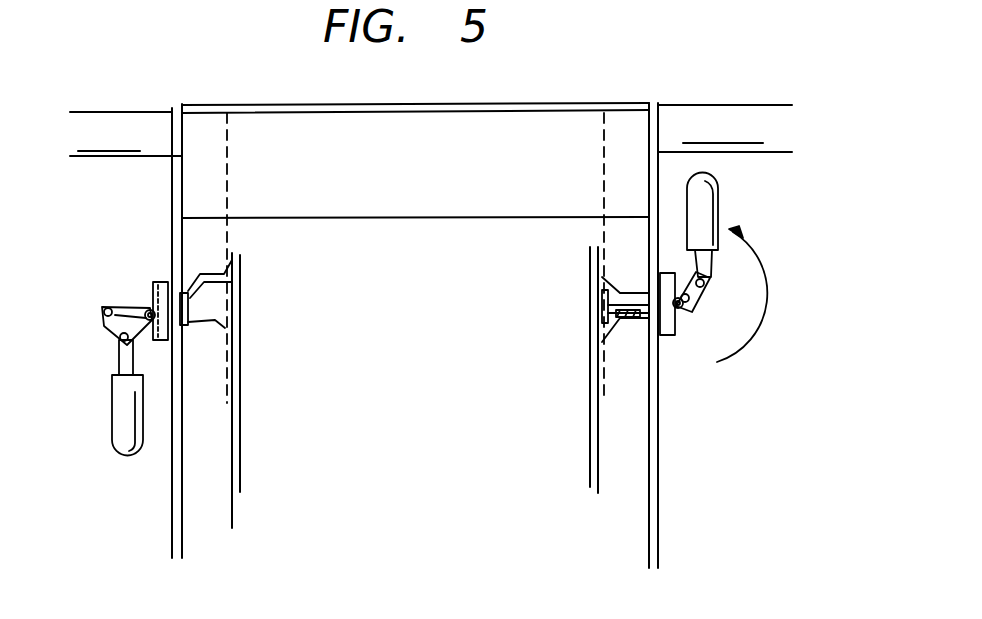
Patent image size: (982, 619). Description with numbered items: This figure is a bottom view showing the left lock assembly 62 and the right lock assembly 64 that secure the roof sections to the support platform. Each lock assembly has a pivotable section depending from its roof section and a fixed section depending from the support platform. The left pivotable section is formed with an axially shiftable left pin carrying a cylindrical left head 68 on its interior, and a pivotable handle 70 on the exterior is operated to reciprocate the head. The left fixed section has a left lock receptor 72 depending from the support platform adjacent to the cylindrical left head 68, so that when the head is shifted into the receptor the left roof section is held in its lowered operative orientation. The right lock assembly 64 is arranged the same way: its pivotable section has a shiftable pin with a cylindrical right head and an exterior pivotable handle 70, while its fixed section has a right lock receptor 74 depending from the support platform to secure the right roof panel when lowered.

The left lock assembly 62 is at (683, 312).
The right lock assembly 64 is at (132, 302).
The cylindrical left head 68 is at (237, 260).
The pivotable handle 70 is at (117, 403).
The left lock receptor 72 is at (602, 352).
The right lock receptor 74 is at (225, 328).